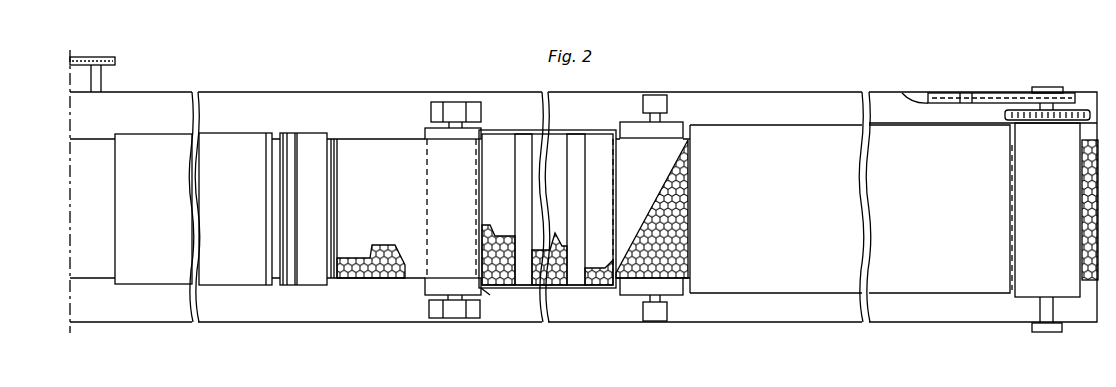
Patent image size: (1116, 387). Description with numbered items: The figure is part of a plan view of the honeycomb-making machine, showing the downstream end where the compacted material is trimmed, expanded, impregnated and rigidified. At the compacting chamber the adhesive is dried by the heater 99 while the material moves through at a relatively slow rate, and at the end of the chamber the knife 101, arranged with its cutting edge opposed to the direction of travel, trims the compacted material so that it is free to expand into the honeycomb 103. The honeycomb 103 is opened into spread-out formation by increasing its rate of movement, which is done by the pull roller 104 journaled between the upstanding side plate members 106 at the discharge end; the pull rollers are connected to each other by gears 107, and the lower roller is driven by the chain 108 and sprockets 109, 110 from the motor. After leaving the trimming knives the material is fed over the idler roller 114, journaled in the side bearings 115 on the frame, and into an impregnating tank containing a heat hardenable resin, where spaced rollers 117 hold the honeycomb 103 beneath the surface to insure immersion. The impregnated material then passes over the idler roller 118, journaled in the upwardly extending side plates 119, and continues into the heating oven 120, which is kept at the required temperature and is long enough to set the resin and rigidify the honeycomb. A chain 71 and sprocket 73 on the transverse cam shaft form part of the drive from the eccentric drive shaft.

The chain 71 is at (70, 66).
The sprocket 73 is at (106, 57).
The heater 99 is at (207, 278).
The knife 101 is at (307, 280).
The honeycomb 103 is at (378, 280).
The pull roller 104 is at (1068, 292).
The upstanding side plate member 106 is at (1052, 92).
The gears 107 is at (1072, 110).
The chain 108 is at (995, 93).
The sprocket 109 is at (1033, 87).
The sprocket 110 is at (941, 93).
The idler roller 114 is at (467, 290).
The side bearing 115 is at (455, 103).
The roller 117 is at (525, 225).
The idler roller 118 is at (683, 296).
The side plate 119 is at (655, 110).
The heating oven 120 is at (890, 232).